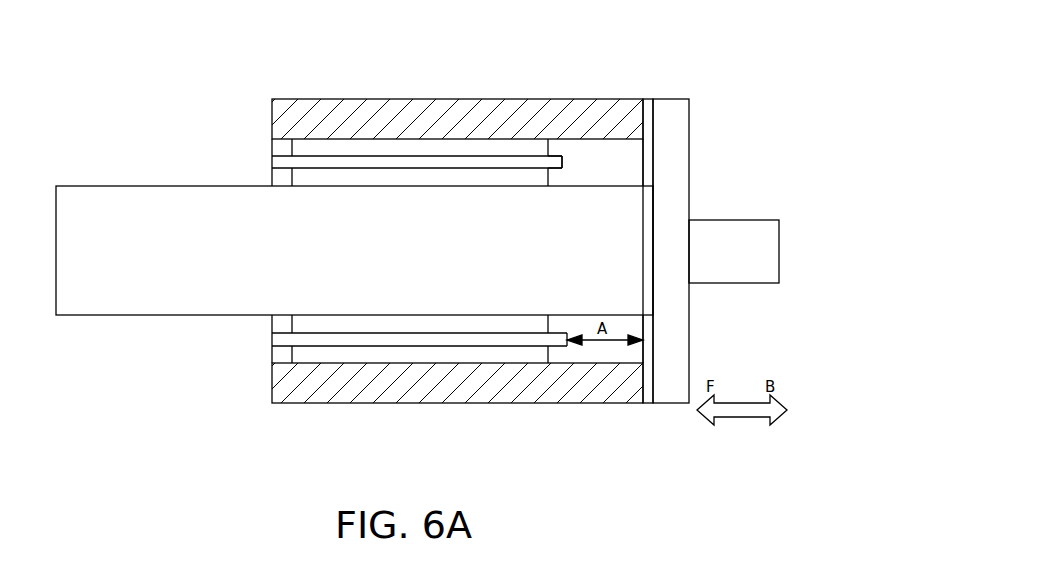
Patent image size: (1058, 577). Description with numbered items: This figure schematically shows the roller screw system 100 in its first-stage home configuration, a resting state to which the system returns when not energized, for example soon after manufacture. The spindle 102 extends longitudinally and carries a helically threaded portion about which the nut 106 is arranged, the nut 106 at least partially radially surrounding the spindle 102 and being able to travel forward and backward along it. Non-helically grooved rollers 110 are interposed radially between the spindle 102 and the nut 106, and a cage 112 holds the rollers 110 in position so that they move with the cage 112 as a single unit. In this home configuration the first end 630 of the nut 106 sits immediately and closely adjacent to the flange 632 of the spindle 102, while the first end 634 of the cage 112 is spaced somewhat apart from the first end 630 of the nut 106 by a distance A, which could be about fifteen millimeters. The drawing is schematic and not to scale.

The roller screw system 100 is at (738, 67).
The spindle 102 is at (448, 262).
The nut 106 is at (485, 98).
The roller 110 is at (337, 147).
The cage 112 is at (408, 163).
The first end of the cage 634 is at (565, 162).
The first end of the nut 630 is at (645, 100).
The flange 632 is at (672, 159).